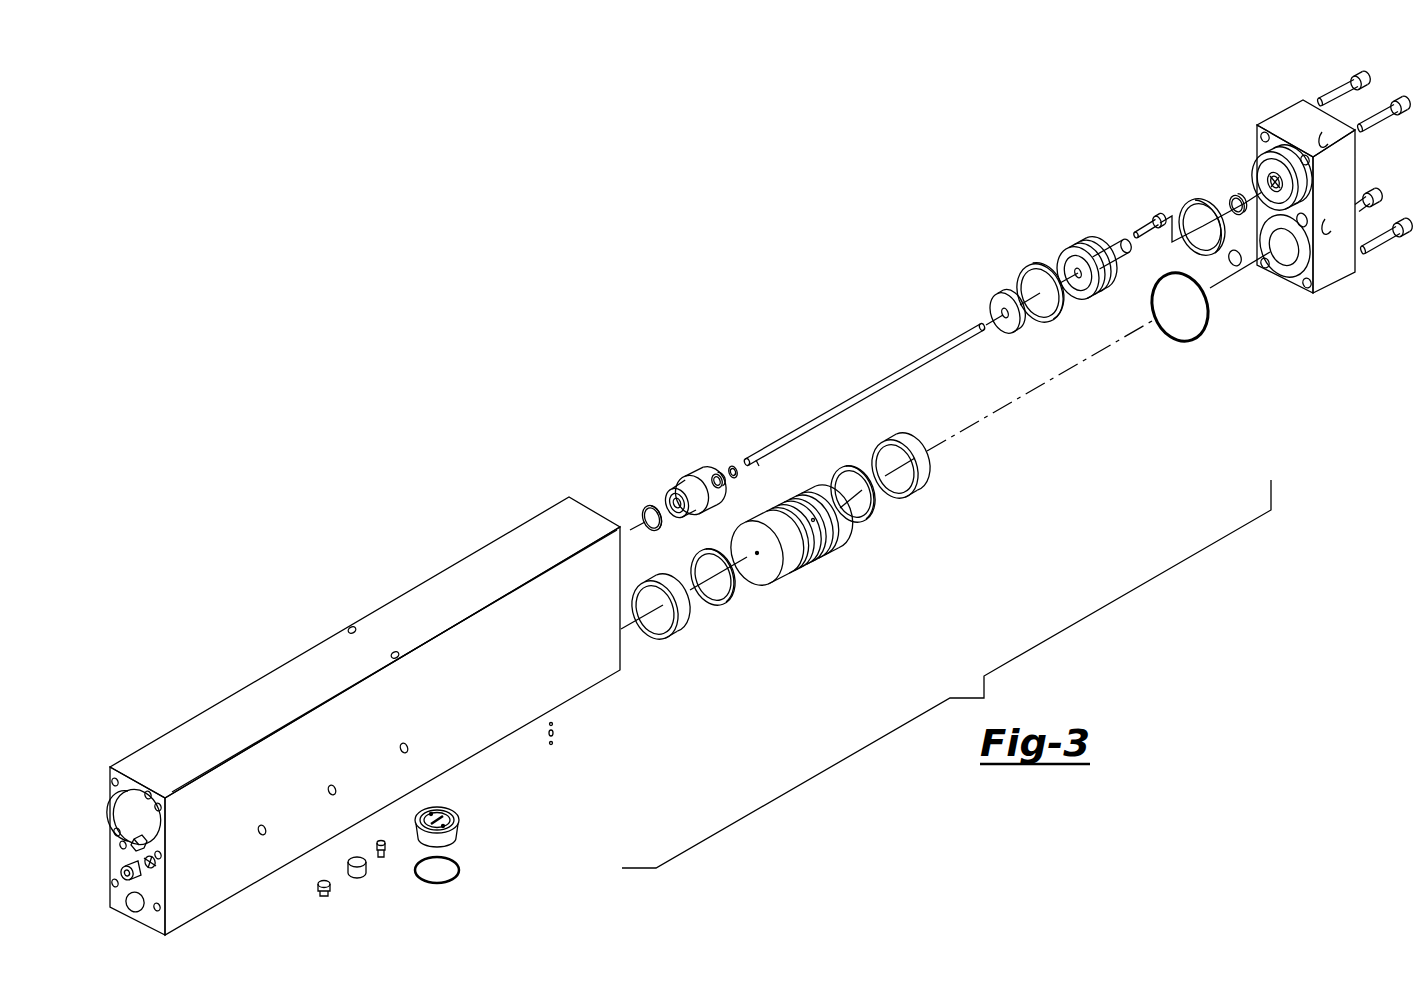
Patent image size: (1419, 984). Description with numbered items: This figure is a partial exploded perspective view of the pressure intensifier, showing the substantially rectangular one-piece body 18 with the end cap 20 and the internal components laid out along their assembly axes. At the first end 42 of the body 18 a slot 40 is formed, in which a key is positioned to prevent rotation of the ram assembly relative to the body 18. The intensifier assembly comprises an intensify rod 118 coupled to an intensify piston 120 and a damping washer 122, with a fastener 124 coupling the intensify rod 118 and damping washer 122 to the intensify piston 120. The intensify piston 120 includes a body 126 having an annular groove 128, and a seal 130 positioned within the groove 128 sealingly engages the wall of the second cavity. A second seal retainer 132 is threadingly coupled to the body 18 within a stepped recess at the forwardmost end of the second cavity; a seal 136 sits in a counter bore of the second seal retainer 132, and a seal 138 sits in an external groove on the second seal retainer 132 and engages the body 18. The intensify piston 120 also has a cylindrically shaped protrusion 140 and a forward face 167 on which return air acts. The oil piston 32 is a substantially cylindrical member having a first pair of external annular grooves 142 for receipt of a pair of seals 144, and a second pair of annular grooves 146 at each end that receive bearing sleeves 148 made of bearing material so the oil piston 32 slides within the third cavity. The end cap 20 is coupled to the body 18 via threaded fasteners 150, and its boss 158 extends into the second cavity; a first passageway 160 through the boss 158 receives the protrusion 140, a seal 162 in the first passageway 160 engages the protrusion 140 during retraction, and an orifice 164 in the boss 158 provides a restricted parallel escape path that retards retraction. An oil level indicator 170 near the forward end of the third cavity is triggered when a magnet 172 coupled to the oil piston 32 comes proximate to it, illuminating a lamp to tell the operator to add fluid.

The body 18 is at (580, 668).
The end cap 20 is at (1338, 268).
The oil piston 32 is at (808, 582).
The slot 40 is at (146, 841).
The first end 42 is at (98, 770).
The intensify rod 118 is at (840, 407).
The intensify piston 120 is at (1043, 215).
The damping washer 122 is at (994, 312).
The fastener 124 is at (1146, 223).
The body 126 is at (1099, 286).
The annular groove 128 is at (1076, 243).
The seal 130 is at (1018, 275).
The second seal retainer 132 is at (672, 455).
The seal 136 is at (714, 472).
The seal 138 is at (647, 506).
The protrusion 140 is at (1108, 250).
The external annular grooves 142 is at (782, 562).
The seals 144 is at (730, 612).
The annular grooves 146 is at (758, 492).
The bearing sleeves 148 is at (688, 625).
The threaded fasteners 150 is at (1398, 104).
The boss 158 is at (1258, 162).
The first passageway 160 is at (1267, 184).
The seal 162 is at (1282, 196).
The orifice 164 is at (1261, 156).
The forward face 167 is at (1083, 299).
The oil level indicator 170 is at (472, 828).
The magnet 172 is at (832, 545).